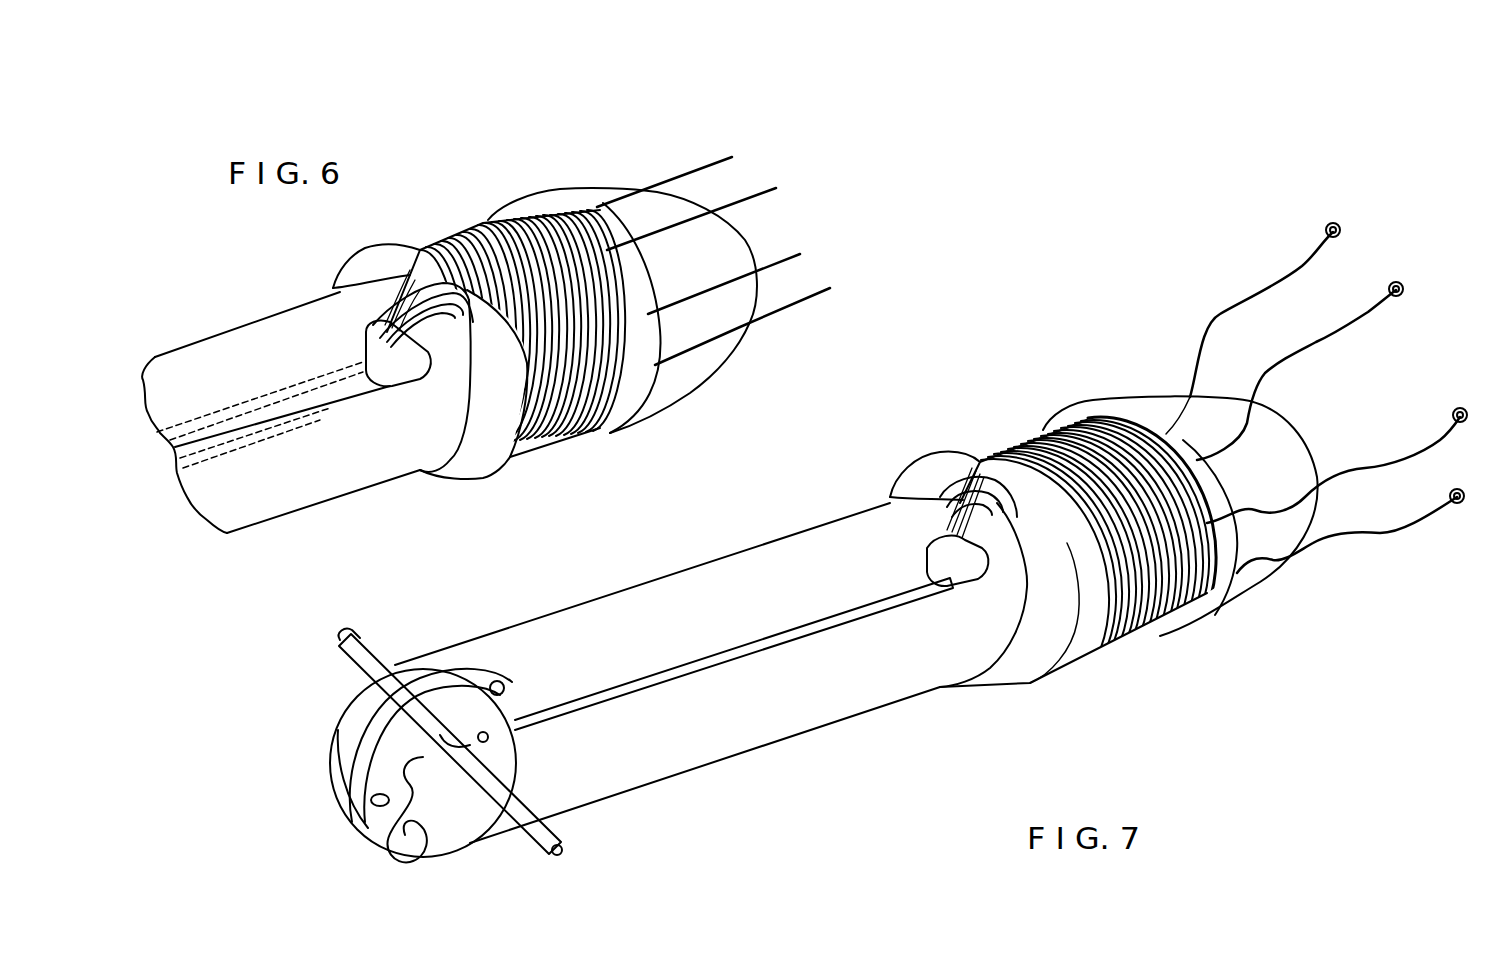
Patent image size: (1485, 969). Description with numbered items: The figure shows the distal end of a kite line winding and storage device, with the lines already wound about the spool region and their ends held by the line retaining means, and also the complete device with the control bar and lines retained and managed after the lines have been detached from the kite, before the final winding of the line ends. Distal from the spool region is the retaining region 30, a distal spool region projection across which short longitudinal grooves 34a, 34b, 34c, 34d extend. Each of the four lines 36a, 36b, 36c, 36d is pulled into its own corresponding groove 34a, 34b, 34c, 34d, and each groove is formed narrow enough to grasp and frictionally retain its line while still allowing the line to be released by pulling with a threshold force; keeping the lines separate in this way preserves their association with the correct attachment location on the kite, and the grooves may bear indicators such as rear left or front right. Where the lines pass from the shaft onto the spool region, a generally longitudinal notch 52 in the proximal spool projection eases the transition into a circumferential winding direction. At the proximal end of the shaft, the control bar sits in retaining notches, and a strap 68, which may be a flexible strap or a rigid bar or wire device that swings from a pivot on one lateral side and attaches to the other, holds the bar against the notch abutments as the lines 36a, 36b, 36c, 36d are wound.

In FIG. 6, the retaining region 30 is at (577, 195).
In FIG. 6, the longitudinal notch 52 is at (363, 278).
In FIG. 6, the line 36a is at (715, 160).
In FIG. 6, the line 36b is at (762, 188).
In FIG. 6, the line 36c is at (786, 254).
In FIG. 6, the line 36d is at (820, 290).
In FIG. 7, the groove 34a is at (1147, 420).
In FIG. 7, the groove 34b is at (1197, 460).
In FIG. 7, the groove 34c is at (1207, 523).
In FIG. 7, the groove 34d is at (1233, 567).
In FIG. 7, the strap 68 is at (340, 750).